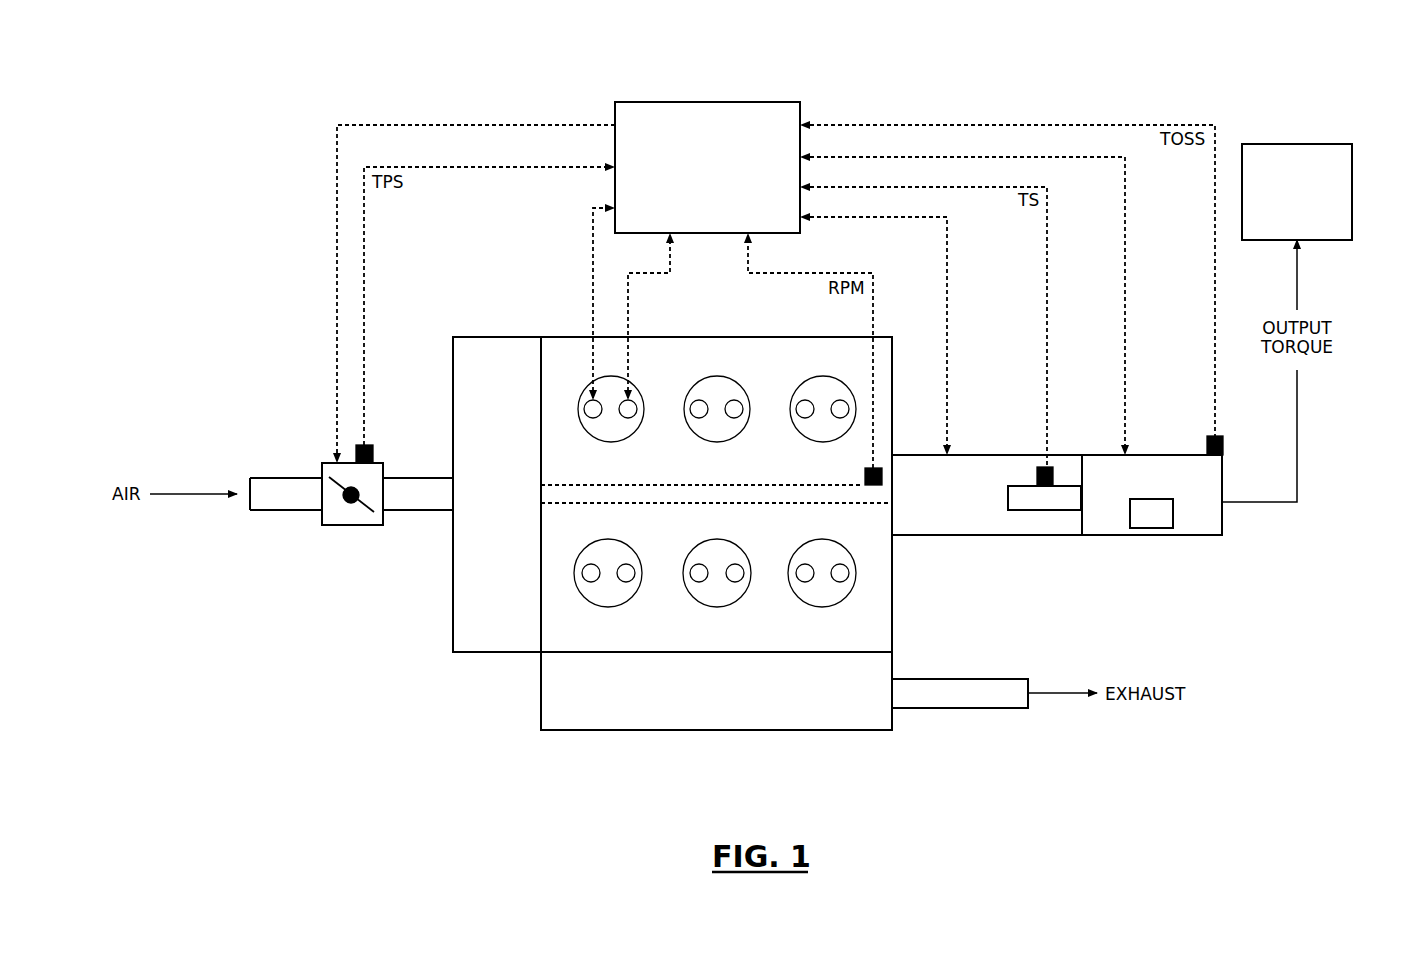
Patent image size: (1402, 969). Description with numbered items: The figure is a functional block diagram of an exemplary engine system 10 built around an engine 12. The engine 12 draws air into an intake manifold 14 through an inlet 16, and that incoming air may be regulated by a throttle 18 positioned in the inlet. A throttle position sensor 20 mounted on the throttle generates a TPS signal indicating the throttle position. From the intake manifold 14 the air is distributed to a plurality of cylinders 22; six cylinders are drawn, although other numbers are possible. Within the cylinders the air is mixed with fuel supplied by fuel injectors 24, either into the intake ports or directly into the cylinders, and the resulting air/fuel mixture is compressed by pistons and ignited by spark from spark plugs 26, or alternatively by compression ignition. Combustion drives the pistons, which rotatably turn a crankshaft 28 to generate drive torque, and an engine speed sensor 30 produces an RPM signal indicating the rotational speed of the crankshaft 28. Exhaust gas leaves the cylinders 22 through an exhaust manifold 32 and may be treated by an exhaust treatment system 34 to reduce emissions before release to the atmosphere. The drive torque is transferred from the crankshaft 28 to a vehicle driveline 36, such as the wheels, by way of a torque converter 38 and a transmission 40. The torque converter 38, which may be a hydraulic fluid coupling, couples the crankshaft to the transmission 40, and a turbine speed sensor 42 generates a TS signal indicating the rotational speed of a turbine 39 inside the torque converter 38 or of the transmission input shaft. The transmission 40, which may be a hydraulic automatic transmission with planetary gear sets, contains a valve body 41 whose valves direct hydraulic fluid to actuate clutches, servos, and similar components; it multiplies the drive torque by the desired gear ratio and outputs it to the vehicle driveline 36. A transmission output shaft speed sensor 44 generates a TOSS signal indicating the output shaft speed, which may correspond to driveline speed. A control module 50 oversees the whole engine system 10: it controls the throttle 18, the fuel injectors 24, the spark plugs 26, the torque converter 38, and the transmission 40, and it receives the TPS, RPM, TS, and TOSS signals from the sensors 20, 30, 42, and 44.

The engine system 10 is at (233, 60).
The engine 12 is at (698, 337).
The intake manifold 14 is at (498, 337).
The inlet 16 is at (285, 510).
The throttle 18 is at (350, 525).
The throttle position sensor 20 is at (373, 450).
The cylinders 22 is at (798, 385).
The fuel injectors 24 is at (593, 418).
The spark plugs 26 is at (628, 418).
The crankshaft 28 is at (752, 503).
The engine speed sensor 30 is at (865, 478).
The exhaust manifold 32 is at (718, 730).
The exhaust treatment system 34 is at (962, 708).
The vehicle driveline 36 is at (1297, 144).
The torque converter 38 is at (947, 535).
The turbine 39 is at (1045, 510).
The transmission 40 is at (1115, 535).
The valve body 41 is at (1150, 528).
The turbine speed sensor 42 is at (1038, 468).
The transmission output shaft speed sensor 44 is at (1223, 441).
The control module 50 is at (708, 102).